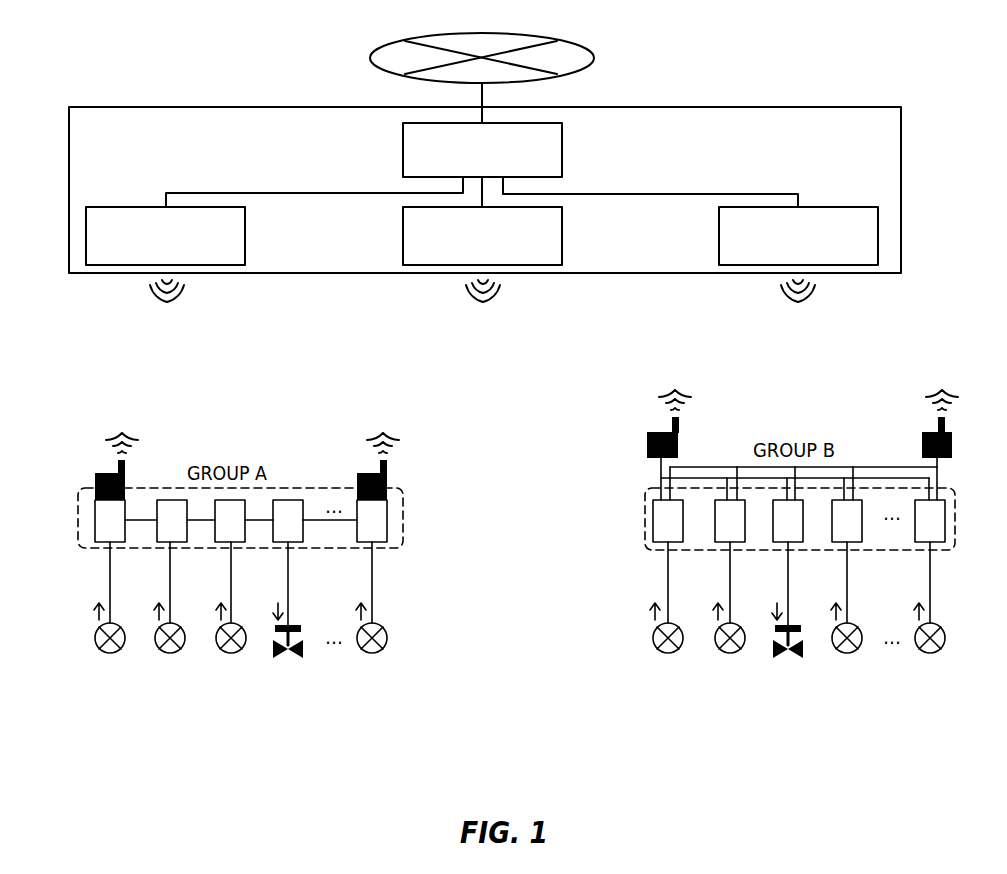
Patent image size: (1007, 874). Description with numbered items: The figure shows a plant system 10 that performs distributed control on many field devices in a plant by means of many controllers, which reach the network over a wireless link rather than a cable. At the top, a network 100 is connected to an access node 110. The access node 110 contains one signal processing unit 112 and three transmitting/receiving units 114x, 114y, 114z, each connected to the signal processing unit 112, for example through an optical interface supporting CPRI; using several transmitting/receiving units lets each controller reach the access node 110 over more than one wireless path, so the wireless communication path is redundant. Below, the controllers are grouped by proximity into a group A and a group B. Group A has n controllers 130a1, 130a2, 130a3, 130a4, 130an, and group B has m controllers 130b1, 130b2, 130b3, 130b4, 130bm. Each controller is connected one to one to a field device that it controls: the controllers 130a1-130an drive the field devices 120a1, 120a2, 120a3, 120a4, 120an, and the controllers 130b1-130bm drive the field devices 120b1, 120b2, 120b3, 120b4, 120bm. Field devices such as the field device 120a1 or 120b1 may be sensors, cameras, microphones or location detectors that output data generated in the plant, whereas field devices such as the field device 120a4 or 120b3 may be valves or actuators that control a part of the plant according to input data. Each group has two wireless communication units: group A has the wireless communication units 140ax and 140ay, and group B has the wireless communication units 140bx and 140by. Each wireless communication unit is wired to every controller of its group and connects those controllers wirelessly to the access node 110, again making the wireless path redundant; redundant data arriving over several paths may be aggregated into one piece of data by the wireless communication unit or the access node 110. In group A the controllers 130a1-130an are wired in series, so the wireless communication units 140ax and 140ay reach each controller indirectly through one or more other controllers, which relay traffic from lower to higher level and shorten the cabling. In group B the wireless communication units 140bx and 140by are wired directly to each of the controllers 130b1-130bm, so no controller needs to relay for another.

The plant system 10 is at (507, 733).
The network 100 is at (596, 48).
The access node 110 is at (128, 145).
The signal processing unit 112 is at (562, 156).
The transmitting/receiving unit 114x is at (245, 245).
The transmitting/receiving unit 114y is at (562, 245).
The transmitting/receiving unit 114z is at (835, 207).
The field device 120a1 is at (110, 653).
The field device 120a2 is at (170, 653).
The field device 120a3 is at (231, 653).
The field device 120a4 is at (288, 658).
The field device 120an is at (372, 653).
The field device 120b1 is at (668, 653).
The field device 120b2 is at (730, 653).
The field device 120b3 is at (788, 658).
The field device 120b4 is at (847, 653).
The field device 120bm is at (930, 653).
The controller 130a1 is at (95, 543).
The controller 130a2 is at (157, 543).
The controller 130a3 is at (215, 543).
The controller 130a4 is at (273, 543).
The controller 130an is at (357, 543).
The controller 130b1 is at (653, 543).
The controller 130b2 is at (715, 543).
The controller 130b3 is at (773, 543).
The controller 130b4 is at (832, 543).
The controller 130bm is at (915, 543).
The wireless communication unit 140ax is at (95, 473).
The wireless communication unit 140ay is at (357, 473).
The wireless communication unit 140bx is at (647, 432).
The wireless communication unit 140by is at (922, 432).